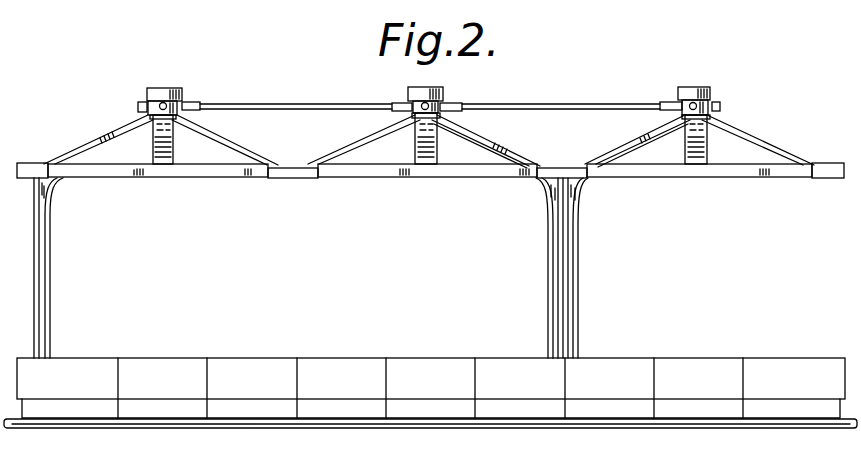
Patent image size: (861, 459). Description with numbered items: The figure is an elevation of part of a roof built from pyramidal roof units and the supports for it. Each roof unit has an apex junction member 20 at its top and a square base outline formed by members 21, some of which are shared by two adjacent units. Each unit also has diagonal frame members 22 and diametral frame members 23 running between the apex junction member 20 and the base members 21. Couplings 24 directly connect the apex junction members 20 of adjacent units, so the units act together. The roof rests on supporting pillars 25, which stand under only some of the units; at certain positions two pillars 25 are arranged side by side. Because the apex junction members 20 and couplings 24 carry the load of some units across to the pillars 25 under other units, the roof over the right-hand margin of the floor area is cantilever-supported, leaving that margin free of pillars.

The apex junction member 20 is at (162, 97).
The base members 21 is at (227, 172).
The diagonal frame members 22 is at (88, 140).
The diametral frame members 23 is at (152, 147).
The couplings 24 is at (253, 103).
The supporting pillars 25 is at (45, 270).